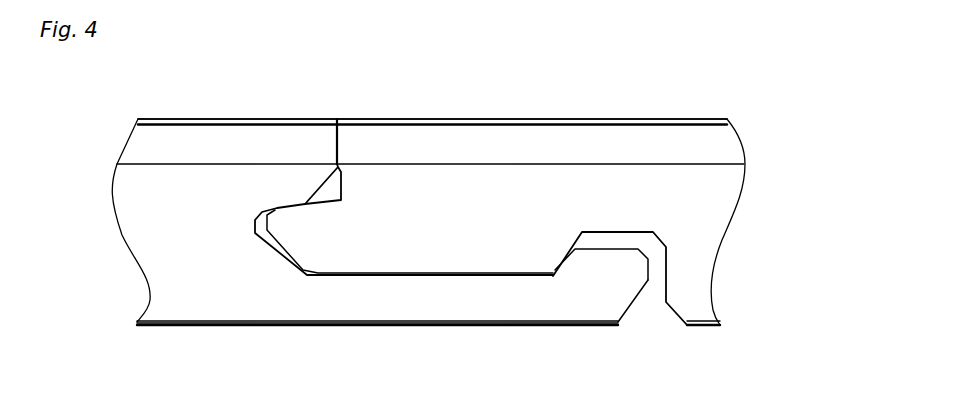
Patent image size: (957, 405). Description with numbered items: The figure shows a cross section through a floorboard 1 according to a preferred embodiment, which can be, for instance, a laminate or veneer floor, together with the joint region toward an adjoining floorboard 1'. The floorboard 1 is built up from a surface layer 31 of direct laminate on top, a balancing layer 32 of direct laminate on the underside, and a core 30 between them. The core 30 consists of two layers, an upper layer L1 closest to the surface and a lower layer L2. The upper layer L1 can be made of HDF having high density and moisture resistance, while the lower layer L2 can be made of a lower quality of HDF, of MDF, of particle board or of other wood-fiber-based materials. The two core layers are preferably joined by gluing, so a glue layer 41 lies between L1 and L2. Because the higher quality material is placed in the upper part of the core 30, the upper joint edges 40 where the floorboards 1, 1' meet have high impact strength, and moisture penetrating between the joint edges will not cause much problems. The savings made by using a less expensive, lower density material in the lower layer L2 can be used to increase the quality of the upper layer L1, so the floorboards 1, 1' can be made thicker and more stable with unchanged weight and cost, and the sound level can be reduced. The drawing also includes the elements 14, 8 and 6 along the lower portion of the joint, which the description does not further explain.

The floorboard 1 is at (237, 78).
The floorboard 1' is at (532, 74).
The upper joint edges 40 is at (337, 112).
The surface layer 31 is at (405, 117).
The upper layer L1 is at (518, 140).
The glue layer 41 is at (132, 162).
The projection 14 is at (614, 238).
The core 30 is at (752, 226).
The wall 8 is at (628, 275).
The bottom wall 6 is at (513, 300).
The balancing layer 32 is at (435, 322).
The lower layer L2 is at (320, 302).